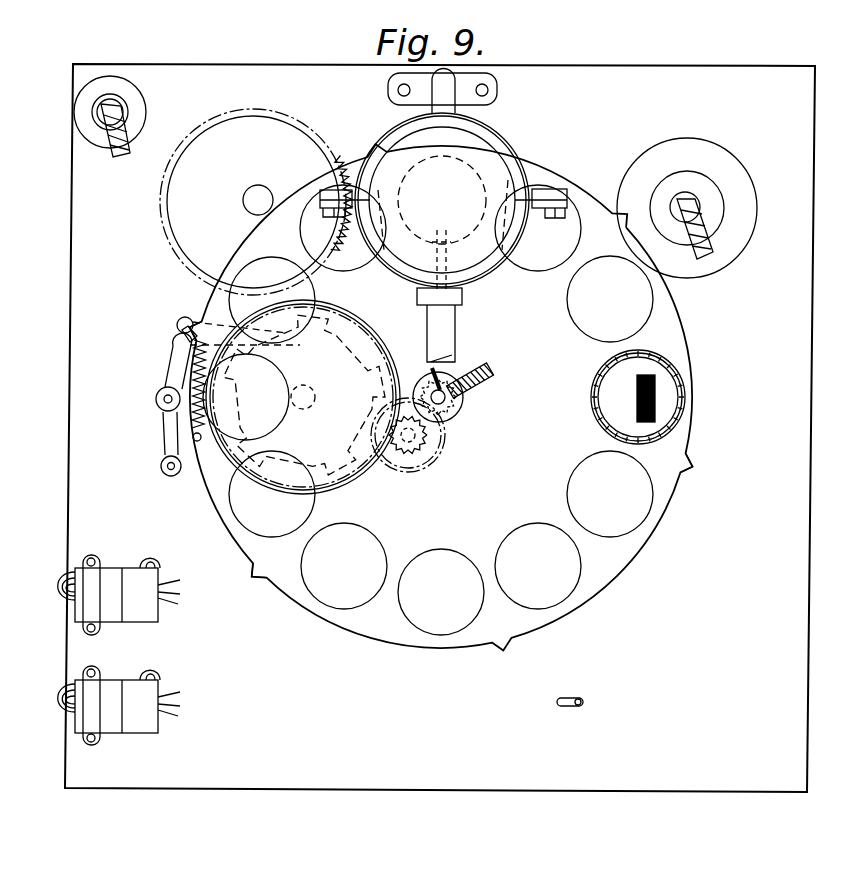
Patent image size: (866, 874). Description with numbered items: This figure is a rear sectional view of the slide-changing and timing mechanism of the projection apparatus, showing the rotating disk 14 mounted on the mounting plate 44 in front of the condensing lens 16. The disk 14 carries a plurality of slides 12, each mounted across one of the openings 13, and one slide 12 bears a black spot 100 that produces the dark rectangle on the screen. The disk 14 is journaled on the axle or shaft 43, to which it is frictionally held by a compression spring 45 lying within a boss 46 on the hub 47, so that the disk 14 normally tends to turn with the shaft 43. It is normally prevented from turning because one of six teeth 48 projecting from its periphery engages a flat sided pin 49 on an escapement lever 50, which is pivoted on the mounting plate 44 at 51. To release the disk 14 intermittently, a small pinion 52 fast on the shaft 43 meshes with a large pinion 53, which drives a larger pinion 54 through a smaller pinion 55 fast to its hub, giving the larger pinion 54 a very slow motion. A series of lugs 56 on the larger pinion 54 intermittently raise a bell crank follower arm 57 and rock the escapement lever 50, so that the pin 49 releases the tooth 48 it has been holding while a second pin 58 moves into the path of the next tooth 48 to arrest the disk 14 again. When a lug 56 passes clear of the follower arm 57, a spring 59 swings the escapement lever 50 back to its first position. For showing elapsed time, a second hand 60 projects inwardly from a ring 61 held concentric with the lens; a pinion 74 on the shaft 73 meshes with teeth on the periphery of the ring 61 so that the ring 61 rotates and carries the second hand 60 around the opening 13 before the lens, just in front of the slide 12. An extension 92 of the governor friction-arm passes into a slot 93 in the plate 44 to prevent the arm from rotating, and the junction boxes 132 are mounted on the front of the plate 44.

The slide 12 is at (677, 390).
The opening 13 is at (675, 372).
The disk 14 is at (678, 327).
The condensing lens 16 is at (503, 150).
The axle or shaft 43 is at (455, 400).
The mounting plate 44 is at (808, 430).
The compression spring 45 is at (488, 367).
The boss 46 is at (493, 382).
The hub 47 is at (455, 410).
The teeth 48 is at (183, 338).
The flat sided pin 49 is at (180, 320).
The escapement lever 50 is at (167, 413).
The pivot 51 is at (157, 399).
The small pinion 52 is at (448, 374).
The large pinion 53 is at (438, 448).
The larger pinion 54 is at (357, 462).
The smaller pinion 55 is at (418, 449).
The lugs 56 is at (350, 327).
The bell crank follower arm 57 is at (287, 335).
The second pin 58 is at (174, 476).
The spring 59 is at (203, 424).
The second hand 60 is at (468, 285).
The ring 61 is at (503, 128).
The shaft 73 is at (256, 186).
The pinion 74 is at (313, 137).
The extension 92 is at (578, 706).
The slot 93 is at (565, 698).
The black spot 100 is at (642, 420).
The junction boxes 132 is at (137, 622).